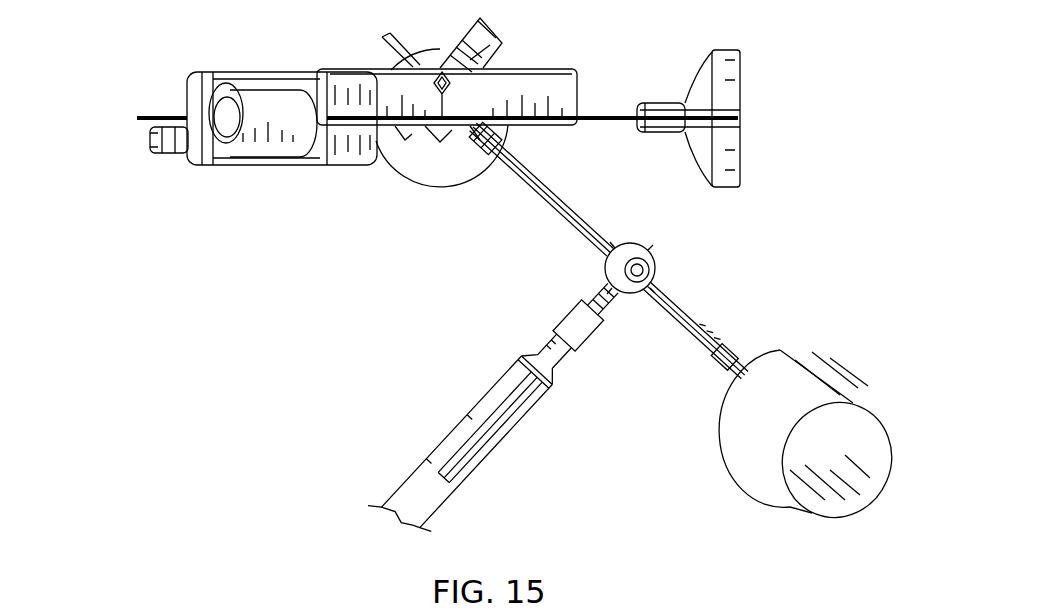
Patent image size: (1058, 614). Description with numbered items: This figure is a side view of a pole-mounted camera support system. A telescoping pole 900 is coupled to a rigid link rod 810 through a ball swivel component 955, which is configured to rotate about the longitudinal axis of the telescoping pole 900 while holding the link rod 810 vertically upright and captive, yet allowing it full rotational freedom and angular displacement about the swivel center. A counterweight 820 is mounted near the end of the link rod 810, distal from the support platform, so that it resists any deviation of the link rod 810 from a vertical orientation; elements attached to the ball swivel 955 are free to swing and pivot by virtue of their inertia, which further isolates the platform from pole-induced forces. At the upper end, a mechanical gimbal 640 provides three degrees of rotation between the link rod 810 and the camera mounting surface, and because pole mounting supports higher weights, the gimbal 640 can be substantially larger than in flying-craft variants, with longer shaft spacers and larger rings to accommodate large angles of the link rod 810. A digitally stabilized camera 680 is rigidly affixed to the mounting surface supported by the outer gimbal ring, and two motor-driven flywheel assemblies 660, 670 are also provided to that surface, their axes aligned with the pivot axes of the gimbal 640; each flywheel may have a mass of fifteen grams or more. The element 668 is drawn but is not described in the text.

The mechanical gimbal 640 is at (503, 53).
The motor-driven flywheel assembly 660 is at (742, 87).
The proximal fitting 668 is at (147, 142).
The motor-driven flywheel assembly 670 is at (415, 182).
The digitally stabilized camera 680 is at (203, 180).
The link rod 810 is at (532, 233).
The counterweight 820 is at (752, 468).
The telescoping pole 900 is at (352, 443).
The ball swivel component 955 is at (684, 267).